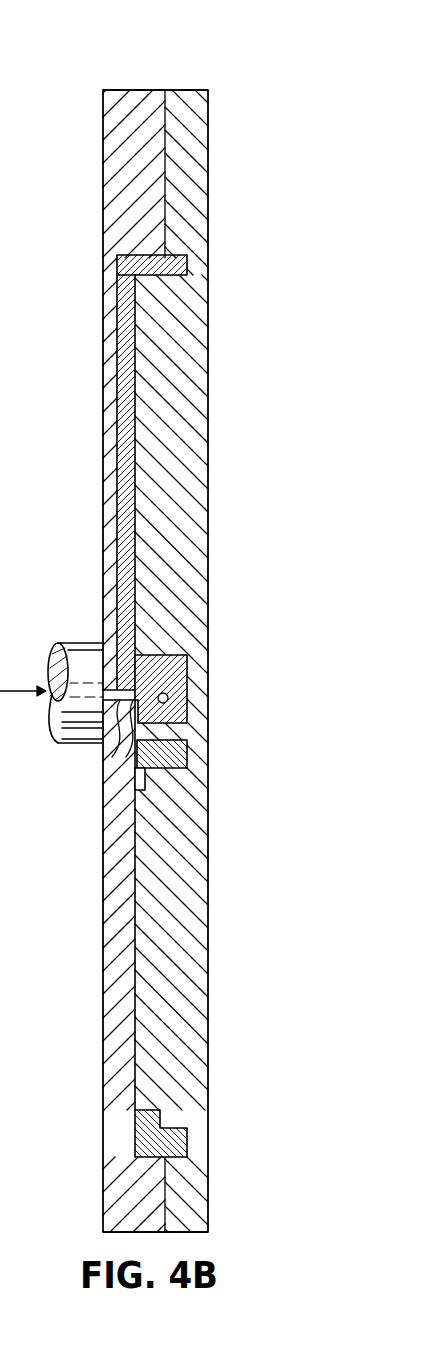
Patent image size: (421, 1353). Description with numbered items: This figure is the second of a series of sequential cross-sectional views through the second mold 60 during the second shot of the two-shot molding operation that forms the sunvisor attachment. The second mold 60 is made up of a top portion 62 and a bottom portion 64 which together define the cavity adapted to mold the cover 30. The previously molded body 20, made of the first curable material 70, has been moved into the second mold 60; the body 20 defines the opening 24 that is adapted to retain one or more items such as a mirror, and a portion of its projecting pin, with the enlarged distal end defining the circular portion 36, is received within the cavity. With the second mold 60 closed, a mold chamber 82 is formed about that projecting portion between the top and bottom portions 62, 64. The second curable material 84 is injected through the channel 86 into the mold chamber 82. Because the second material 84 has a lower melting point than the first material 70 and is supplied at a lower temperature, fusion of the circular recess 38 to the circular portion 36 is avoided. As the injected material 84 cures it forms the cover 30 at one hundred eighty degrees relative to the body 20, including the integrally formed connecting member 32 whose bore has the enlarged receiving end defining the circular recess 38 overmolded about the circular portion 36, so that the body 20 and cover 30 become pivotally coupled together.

The second mold 60 is at (248, 116).
The top portion 62 is at (190, 90).
The bottom portion 64 is at (124, 90).
The second curable material 84 is at (178, 268).
The mold chamber 82 is at (120, 385).
The cover 30 is at (115, 322).
The connecting member 32 is at (113, 757).
The circular recess 38 is at (185, 668).
The circular portion 36 is at (168, 697).
The first curable material 70 is at (177, 756).
The opening 24 is at (150, 781).
The body 20 is at (190, 1147).
The channel 86 is at (90, 684).